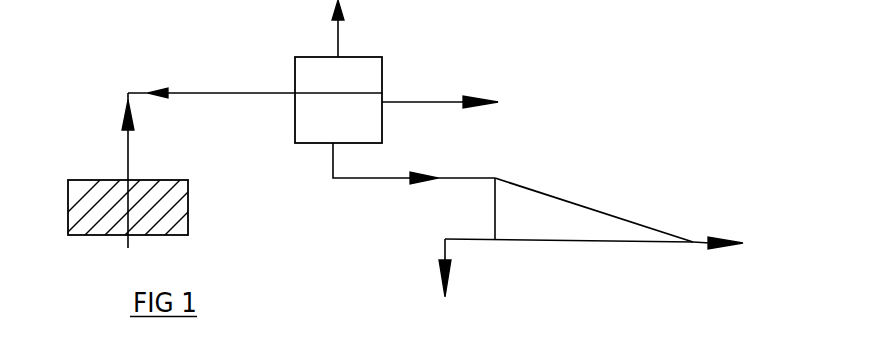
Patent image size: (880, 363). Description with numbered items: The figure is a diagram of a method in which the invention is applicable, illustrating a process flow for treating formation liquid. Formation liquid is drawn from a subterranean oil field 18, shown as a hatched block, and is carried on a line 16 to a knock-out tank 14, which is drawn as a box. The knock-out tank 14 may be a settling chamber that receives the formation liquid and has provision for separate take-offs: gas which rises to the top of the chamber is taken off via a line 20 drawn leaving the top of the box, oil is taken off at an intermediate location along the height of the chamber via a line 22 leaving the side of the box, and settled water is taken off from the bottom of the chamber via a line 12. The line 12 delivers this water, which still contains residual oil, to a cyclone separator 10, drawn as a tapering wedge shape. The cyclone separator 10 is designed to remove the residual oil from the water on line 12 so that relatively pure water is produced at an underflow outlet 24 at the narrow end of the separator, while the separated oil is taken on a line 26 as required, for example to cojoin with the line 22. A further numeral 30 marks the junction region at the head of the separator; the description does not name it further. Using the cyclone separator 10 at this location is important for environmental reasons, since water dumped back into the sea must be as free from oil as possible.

The cyclone separator 10 is at (594, 186).
The line 12 is at (468, 180).
The knock-out tank 14 is at (375, 79).
The line 16 is at (205, 93).
The subterranean oil field 18 is at (137, 250).
The line 20 is at (340, 35).
The line 22 is at (441, 104).
The underflow outlet 24 is at (700, 241).
The line 26 is at (442, 250).
The partition line 30 is at (490, 241).